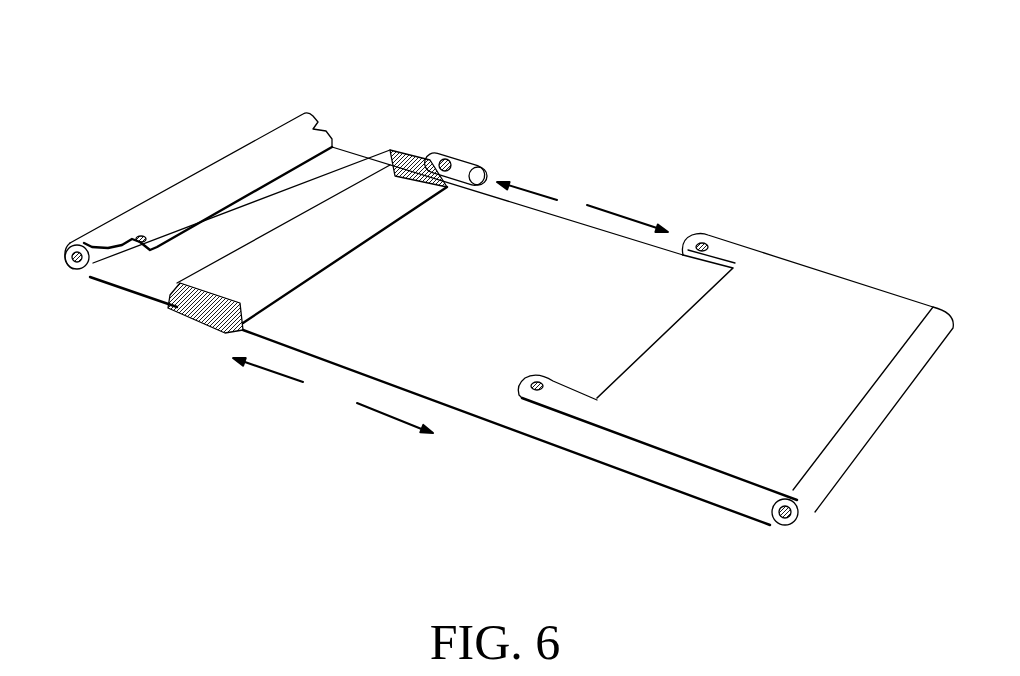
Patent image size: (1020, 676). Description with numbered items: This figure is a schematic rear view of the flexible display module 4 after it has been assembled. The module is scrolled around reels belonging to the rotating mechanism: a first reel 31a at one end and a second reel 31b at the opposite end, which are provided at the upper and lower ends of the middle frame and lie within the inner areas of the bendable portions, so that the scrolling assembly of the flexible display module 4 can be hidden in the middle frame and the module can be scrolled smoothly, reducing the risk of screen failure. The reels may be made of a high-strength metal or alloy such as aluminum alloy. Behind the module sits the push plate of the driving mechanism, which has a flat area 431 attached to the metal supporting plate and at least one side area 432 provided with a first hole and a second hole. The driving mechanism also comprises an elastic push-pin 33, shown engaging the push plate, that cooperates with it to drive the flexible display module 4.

The flexible display module 4 is at (788, 292).
The first reel 31a is at (66, 268).
The second reel 31b is at (783, 523).
The elastic push-pin 33 is at (467, 170).
The flat area 431 is at (367, 228).
The side area 432 is at (408, 167).